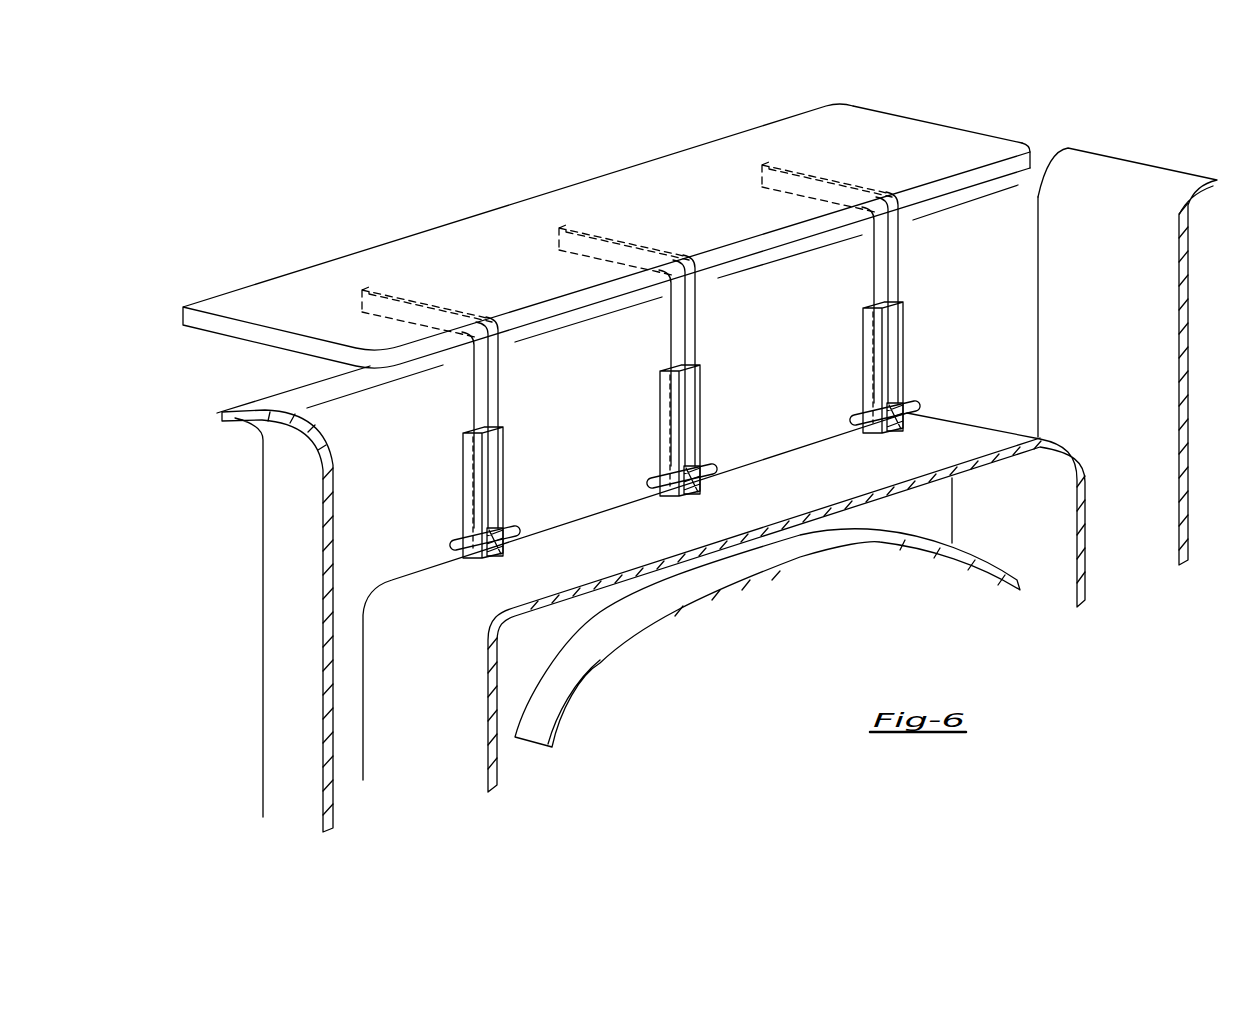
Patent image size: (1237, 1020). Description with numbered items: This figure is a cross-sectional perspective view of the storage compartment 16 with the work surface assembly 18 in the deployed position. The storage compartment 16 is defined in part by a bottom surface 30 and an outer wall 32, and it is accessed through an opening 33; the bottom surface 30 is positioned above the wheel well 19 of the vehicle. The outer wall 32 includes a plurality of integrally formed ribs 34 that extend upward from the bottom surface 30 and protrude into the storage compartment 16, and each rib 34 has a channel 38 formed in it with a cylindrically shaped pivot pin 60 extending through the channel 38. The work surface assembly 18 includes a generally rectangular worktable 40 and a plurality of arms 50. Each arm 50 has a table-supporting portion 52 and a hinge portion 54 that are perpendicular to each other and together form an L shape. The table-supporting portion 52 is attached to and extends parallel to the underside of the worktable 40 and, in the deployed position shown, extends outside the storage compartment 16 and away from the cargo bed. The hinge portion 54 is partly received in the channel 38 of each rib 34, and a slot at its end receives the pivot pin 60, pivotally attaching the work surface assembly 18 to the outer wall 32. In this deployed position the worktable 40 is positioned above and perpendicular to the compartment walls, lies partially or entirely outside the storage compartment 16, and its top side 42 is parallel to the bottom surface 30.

The storage compartment 16 is at (438, 153).
The work surface assembly 18 is at (280, 255).
The wheel well 19 is at (596, 760).
The bottom surface 30 is at (697, 542).
The outer wall 32 is at (345, 500).
The opening 33 is at (1170, 203).
The rib 34 is at (463, 448).
The channel 38 is at (503, 556).
The worktable 40 is at (1007, 124).
The top side 42 is at (983, 162).
The arm 50 is at (512, 357).
The table-supporting portion 52 is at (400, 293).
The hinge portion 54 is at (501, 396).
The pivot pin 60 is at (455, 546).